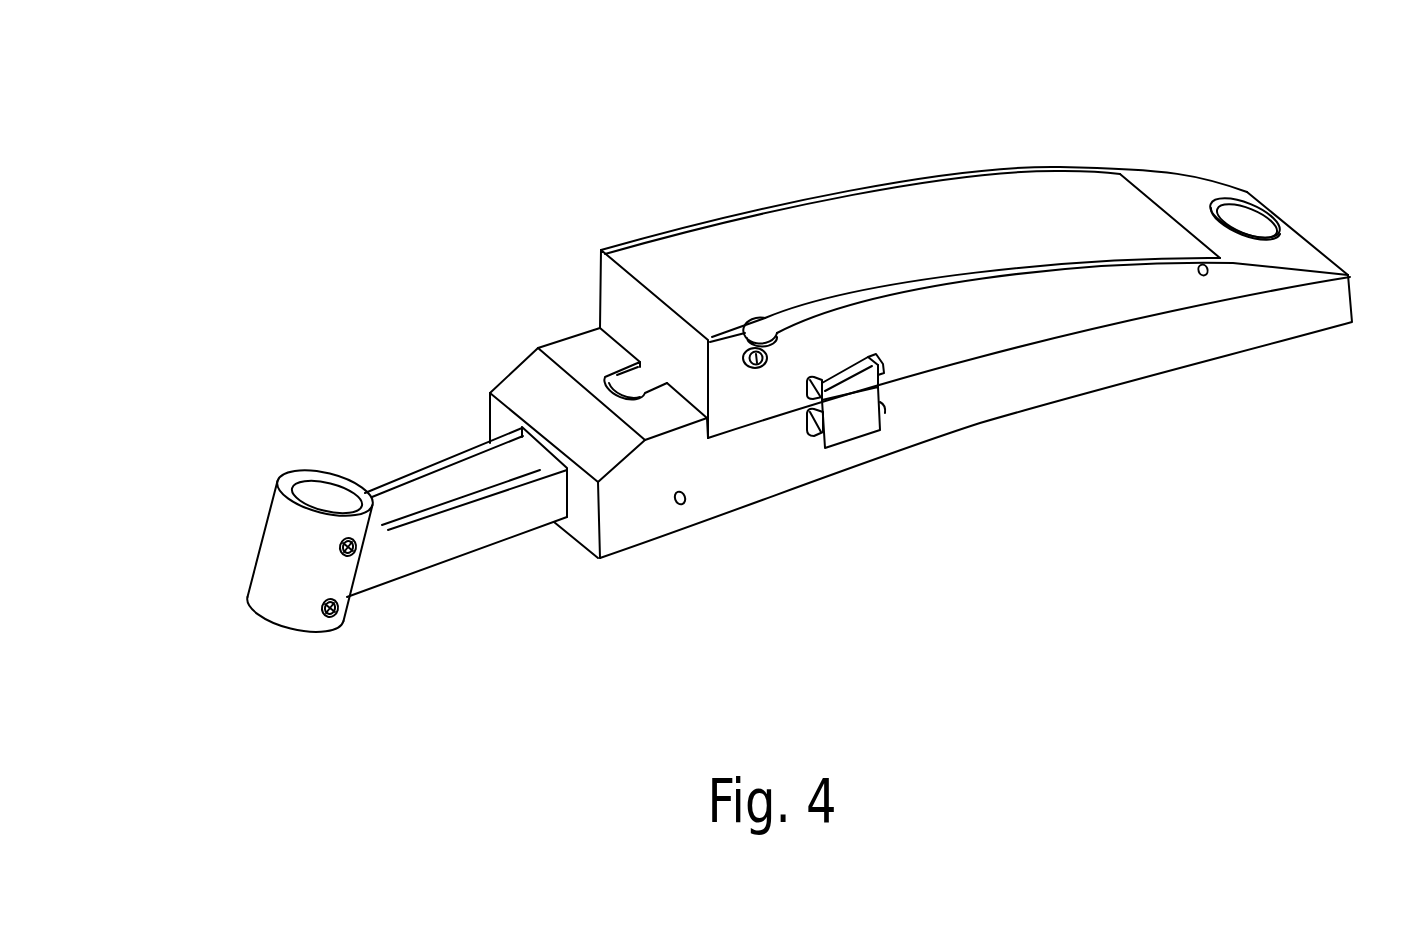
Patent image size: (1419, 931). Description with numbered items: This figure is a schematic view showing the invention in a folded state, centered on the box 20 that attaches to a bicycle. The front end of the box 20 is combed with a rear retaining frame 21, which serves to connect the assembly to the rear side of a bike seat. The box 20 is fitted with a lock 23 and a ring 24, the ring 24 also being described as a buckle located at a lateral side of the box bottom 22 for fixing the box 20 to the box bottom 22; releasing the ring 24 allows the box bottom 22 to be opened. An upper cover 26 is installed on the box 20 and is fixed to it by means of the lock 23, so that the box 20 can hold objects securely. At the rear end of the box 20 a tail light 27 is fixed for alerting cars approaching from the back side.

The box 20 is at (1033, 313).
The rear retaining frame 21 is at (283, 553).
The box bottom 22 is at (958, 403).
The lock 23 is at (753, 368).
The ring 24 is at (858, 423).
The upper cover 26 is at (1038, 192).
The tail light 27 is at (1250, 215).